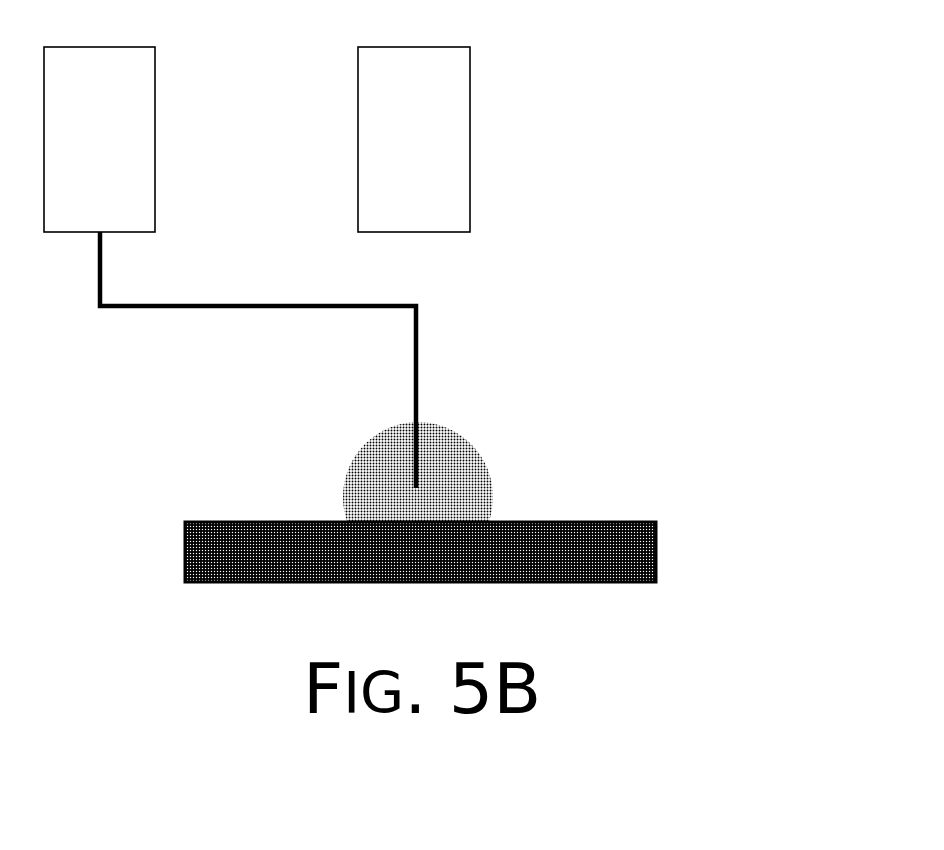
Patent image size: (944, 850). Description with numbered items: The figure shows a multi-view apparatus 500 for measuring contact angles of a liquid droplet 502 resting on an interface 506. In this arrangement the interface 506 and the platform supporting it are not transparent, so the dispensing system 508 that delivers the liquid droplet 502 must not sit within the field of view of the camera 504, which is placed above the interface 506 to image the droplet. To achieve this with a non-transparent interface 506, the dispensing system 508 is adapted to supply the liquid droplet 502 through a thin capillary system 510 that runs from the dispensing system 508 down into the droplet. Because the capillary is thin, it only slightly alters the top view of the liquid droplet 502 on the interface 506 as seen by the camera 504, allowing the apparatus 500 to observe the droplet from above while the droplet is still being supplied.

The multi-view apparatus 500 is at (560, 92).
The liquid droplet 502 is at (342, 481).
The camera 504 is at (433, 154).
The interface 506 is at (185, 562).
The dispensing system 508 is at (312, 303).
The thin capillary system 510 is at (120, 154).